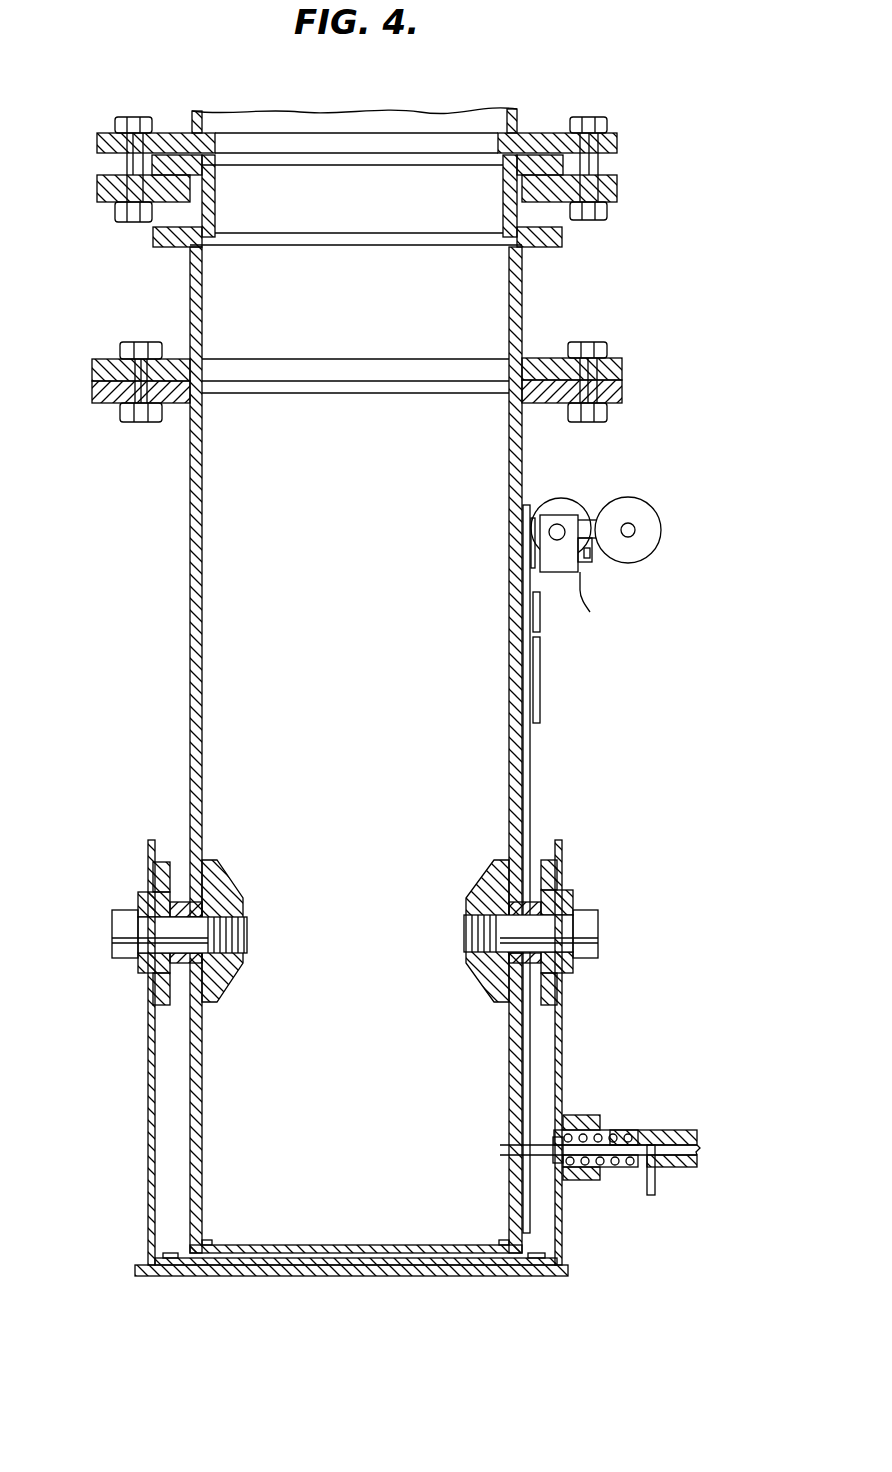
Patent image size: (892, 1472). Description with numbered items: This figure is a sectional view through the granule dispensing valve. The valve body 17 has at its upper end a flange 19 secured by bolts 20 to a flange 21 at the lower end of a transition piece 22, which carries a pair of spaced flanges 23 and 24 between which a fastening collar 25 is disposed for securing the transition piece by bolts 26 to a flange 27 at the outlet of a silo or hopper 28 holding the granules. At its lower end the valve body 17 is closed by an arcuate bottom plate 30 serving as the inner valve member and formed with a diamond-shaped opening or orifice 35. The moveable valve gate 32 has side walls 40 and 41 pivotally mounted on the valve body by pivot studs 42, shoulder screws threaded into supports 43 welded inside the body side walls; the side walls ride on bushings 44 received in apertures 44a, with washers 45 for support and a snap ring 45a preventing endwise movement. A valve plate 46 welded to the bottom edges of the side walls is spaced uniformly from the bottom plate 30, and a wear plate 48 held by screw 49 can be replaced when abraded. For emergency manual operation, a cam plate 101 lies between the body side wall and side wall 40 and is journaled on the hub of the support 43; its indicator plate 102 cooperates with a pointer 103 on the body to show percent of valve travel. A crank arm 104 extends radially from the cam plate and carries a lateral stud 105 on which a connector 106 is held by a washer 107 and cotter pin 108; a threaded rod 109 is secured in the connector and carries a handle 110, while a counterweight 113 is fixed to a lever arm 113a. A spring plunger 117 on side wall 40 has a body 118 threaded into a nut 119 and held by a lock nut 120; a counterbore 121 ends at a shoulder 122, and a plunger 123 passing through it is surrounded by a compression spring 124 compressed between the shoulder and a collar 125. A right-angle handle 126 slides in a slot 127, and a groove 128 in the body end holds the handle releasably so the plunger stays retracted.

The valve body 17 is at (190, 641).
The flange 19 is at (95, 396).
The bolts 20 is at (140, 344).
The flange 21 is at (95, 371).
The transition piece 22 is at (522, 306).
The flange 23 is at (562, 238).
The flange 24 is at (536, 160).
The fastening collar 25 is at (606, 188).
The bolts 26 is at (596, 120).
The flange 27 is at (616, 142).
The silo or hopper 28 is at (468, 108).
The bottom plate 30 is at (264, 1250).
The valve gate 32 is at (150, 1130).
The opening or orifice 35 is at (492, 1250).
The side wall 40 is at (563, 1062).
The side wall 41 is at (148, 1076).
The pivot studs 42 is at (115, 932).
The supports 43 is at (222, 892).
The bushings 44 is at (145, 965).
The apertures 44a is at (567, 970).
The washers 45 is at (150, 862).
The snap ring 45a is at (140, 894).
The valve plate 46 is at (420, 1278).
The wear plate 48 is at (320, 1268).
The screw 49 is at (165, 1256).
The cam plate 101 is at (528, 689).
The indicator plate 102 is at (541, 680).
The pointer 103 is at (541, 610).
The crank arm 104 is at (533, 548).
The lateral stud 105 is at (592, 556).
The connector 106 is at (543, 514).
The washer 107 is at (601, 606).
The cotter pin 108 is at (588, 560).
The threaded rod 109 is at (540, 524).
The handle 110 is at (582, 500).
The counterweight 113 is at (670, 510).
The lever arm 113a is at (636, 529).
The spring plunger 117 is at (684, 1120).
The body 118 is at (598, 1132).
The nut 119 is at (570, 1117).
The lock nut 120 is at (598, 1118).
The counterbore 121 is at (615, 1170).
The shoulder 122 is at (640, 1170).
The plunger 123 is at (625, 1135).
The compression spring 124 is at (570, 1170).
The collar 125 is at (553, 1143).
The handle 126 is at (658, 1186).
The slot 127 is at (690, 1162).
The groove 128 is at (697, 1136).